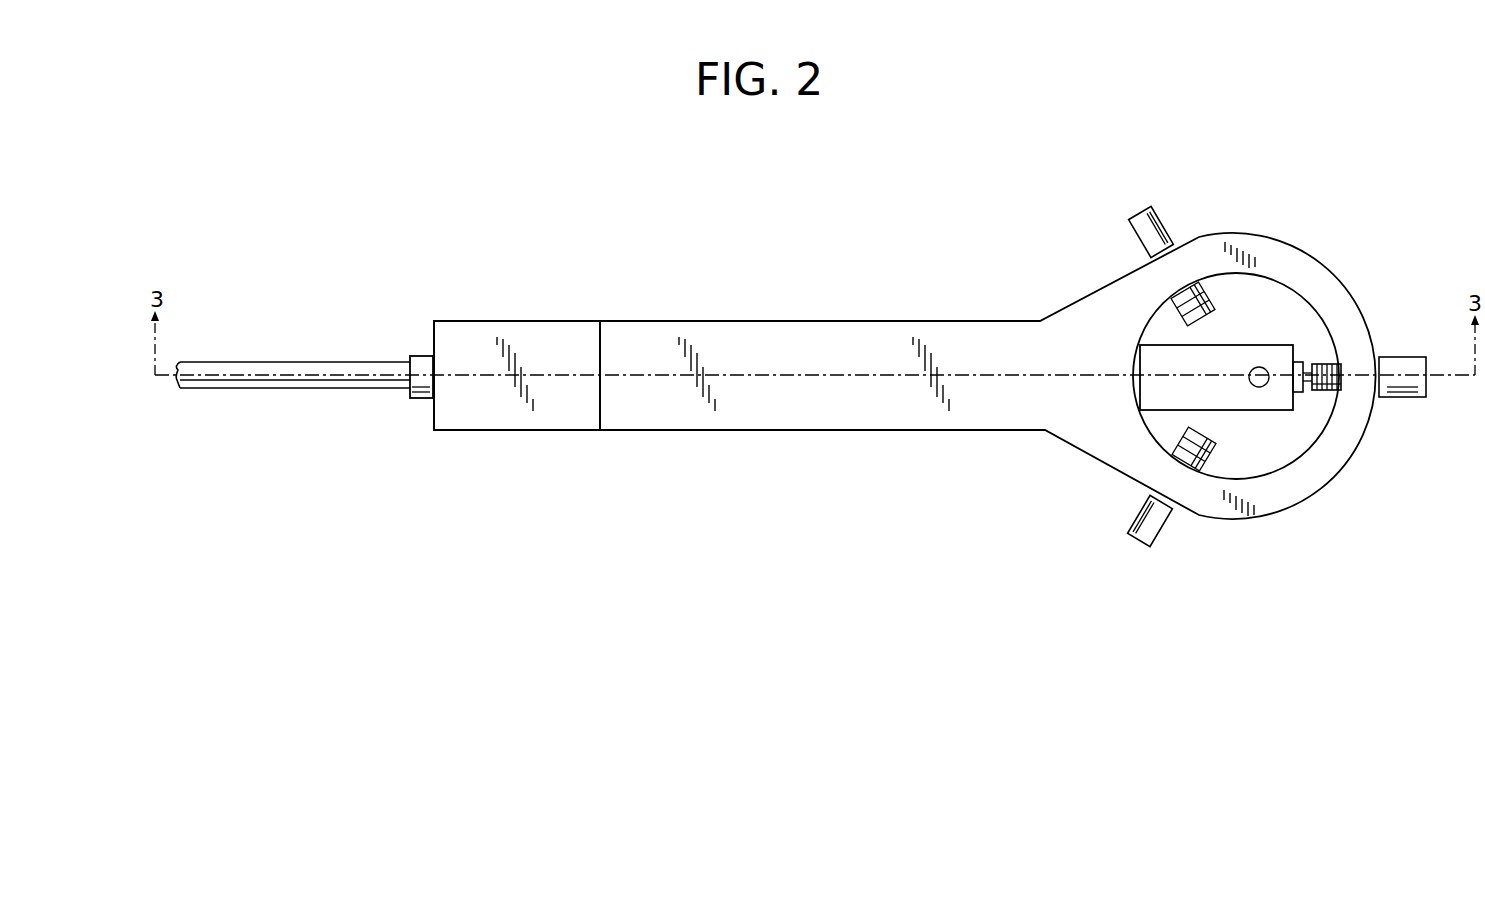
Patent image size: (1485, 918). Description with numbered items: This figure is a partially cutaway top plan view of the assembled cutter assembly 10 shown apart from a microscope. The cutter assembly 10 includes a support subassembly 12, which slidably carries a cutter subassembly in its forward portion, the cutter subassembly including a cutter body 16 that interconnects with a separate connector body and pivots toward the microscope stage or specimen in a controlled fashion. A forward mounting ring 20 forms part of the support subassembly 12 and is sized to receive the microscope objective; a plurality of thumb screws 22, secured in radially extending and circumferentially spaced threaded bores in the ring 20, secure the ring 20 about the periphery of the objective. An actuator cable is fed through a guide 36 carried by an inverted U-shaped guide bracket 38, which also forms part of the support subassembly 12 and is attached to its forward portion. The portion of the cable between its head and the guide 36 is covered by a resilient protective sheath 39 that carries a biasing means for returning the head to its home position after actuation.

The cutter assembly 10 is at (1337, 219).
The support subassembly 12 is at (793, 338).
The cutter body 16 is at (1265, 403).
The forward mounting ring 20 is at (1303, 487).
The thumb screws 22 is at (1162, 222).
The guide 36 is at (423, 359).
The guide bracket 38 is at (530, 325).
The protective sheath 39 is at (287, 364).